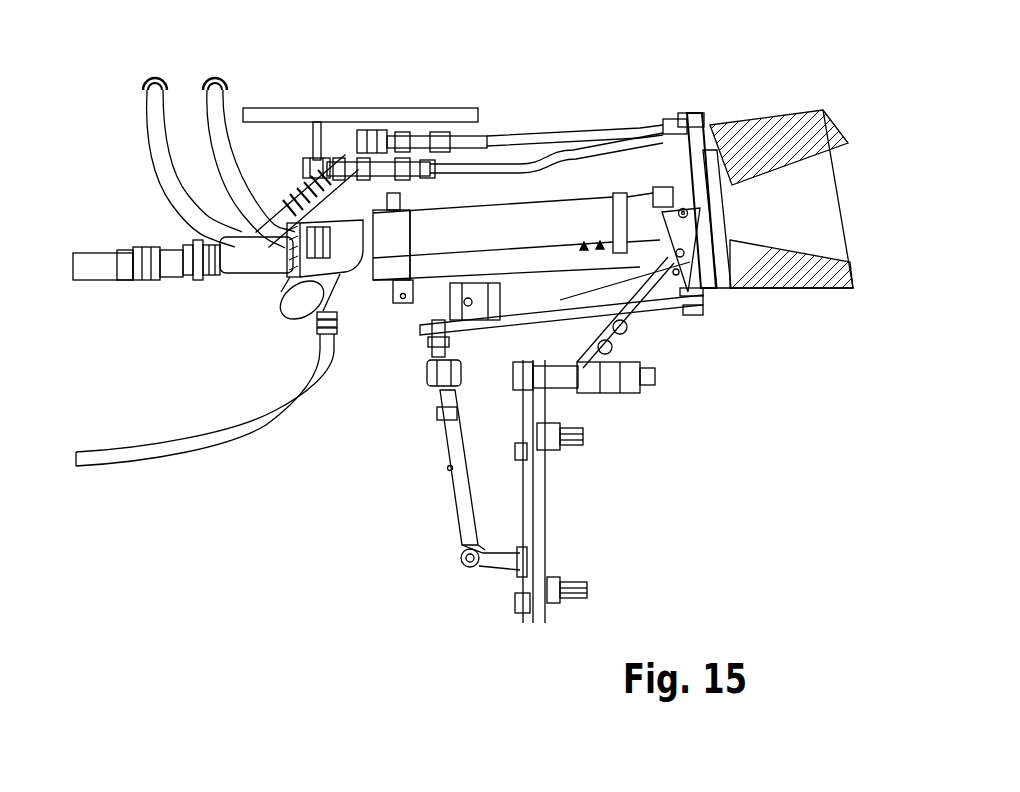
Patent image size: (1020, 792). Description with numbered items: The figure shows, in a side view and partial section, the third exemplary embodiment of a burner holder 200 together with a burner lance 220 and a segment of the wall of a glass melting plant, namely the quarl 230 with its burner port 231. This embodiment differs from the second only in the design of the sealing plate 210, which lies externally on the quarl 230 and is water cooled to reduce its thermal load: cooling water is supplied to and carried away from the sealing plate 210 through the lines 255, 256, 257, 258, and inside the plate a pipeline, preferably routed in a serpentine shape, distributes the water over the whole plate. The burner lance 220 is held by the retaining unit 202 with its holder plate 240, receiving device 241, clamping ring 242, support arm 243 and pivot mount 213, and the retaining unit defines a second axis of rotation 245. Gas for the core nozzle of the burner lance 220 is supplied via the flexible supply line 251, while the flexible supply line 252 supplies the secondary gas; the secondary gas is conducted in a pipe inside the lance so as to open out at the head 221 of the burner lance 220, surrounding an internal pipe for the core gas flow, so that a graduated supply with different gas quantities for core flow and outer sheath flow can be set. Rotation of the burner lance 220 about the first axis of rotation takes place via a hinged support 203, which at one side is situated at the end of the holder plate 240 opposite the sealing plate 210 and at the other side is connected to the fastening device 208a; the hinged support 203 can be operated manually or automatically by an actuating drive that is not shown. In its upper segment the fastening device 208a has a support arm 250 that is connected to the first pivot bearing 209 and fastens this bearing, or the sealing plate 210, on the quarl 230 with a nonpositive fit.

The burner holder 200 is at (783, 484).
The retaining unit 202 is at (453, 305).
The hinged support 203 is at (452, 455).
The fastening device 208a is at (530, 503).
The pivot bearing 209 is at (683, 213).
The sealing plate 210 is at (720, 277).
The pivot mount 213 is at (394, 376).
The burner lance 220 is at (581, 189).
The head of the burner lance 221 is at (653, 185).
The quarl 230 is at (757, 127).
The burner port 231 is at (790, 177).
The holder plate 240 is at (527, 325).
The receiving device 241 is at (540, 277).
The clamping ring 242 is at (410, 225).
The support arm 243 is at (680, 263).
The second axis of rotation 245 is at (690, 310).
The support arm 250 is at (598, 358).
The flexible supply line for secondary gas 251 is at (245, 414).
The flexible supply line for primary gas 252 is at (90, 283).
The pipeline for cooling water supply 255 is at (225, 135).
The pipeline for cooling water supply 256 is at (169, 99).
The pipeline for cooling water return 257 is at (534, 128).
The pipeline for cooling water return 258 is at (619, 116).